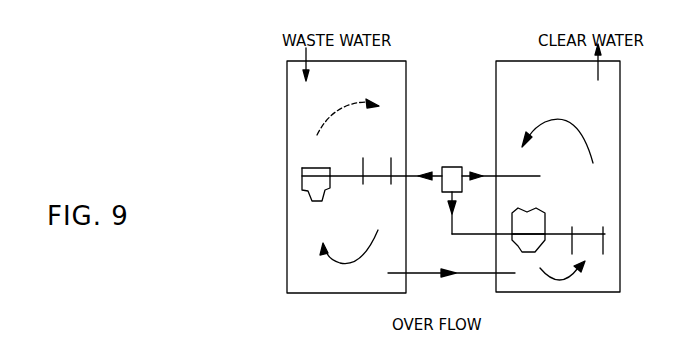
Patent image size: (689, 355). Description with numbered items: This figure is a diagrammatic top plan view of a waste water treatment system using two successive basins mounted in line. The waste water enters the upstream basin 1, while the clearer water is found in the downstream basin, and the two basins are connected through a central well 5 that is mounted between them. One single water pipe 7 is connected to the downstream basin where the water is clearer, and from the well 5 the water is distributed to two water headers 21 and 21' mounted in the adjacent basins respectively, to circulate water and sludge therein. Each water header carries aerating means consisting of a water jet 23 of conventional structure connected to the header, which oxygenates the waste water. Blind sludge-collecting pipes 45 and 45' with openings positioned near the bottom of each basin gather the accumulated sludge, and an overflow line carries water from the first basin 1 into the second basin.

The basin 1 is at (398, 77).
The well 5 is at (450, 166).
The water pipe 7 is at (511, 176).
The water header 21 is at (369, 184).
The water header 21' is at (580, 229).
The water jet 23 is at (423, 212).
The sludge-collecting pipe 45 is at (316, 194).
The sludge-collecting pipe 45' is at (528, 220).